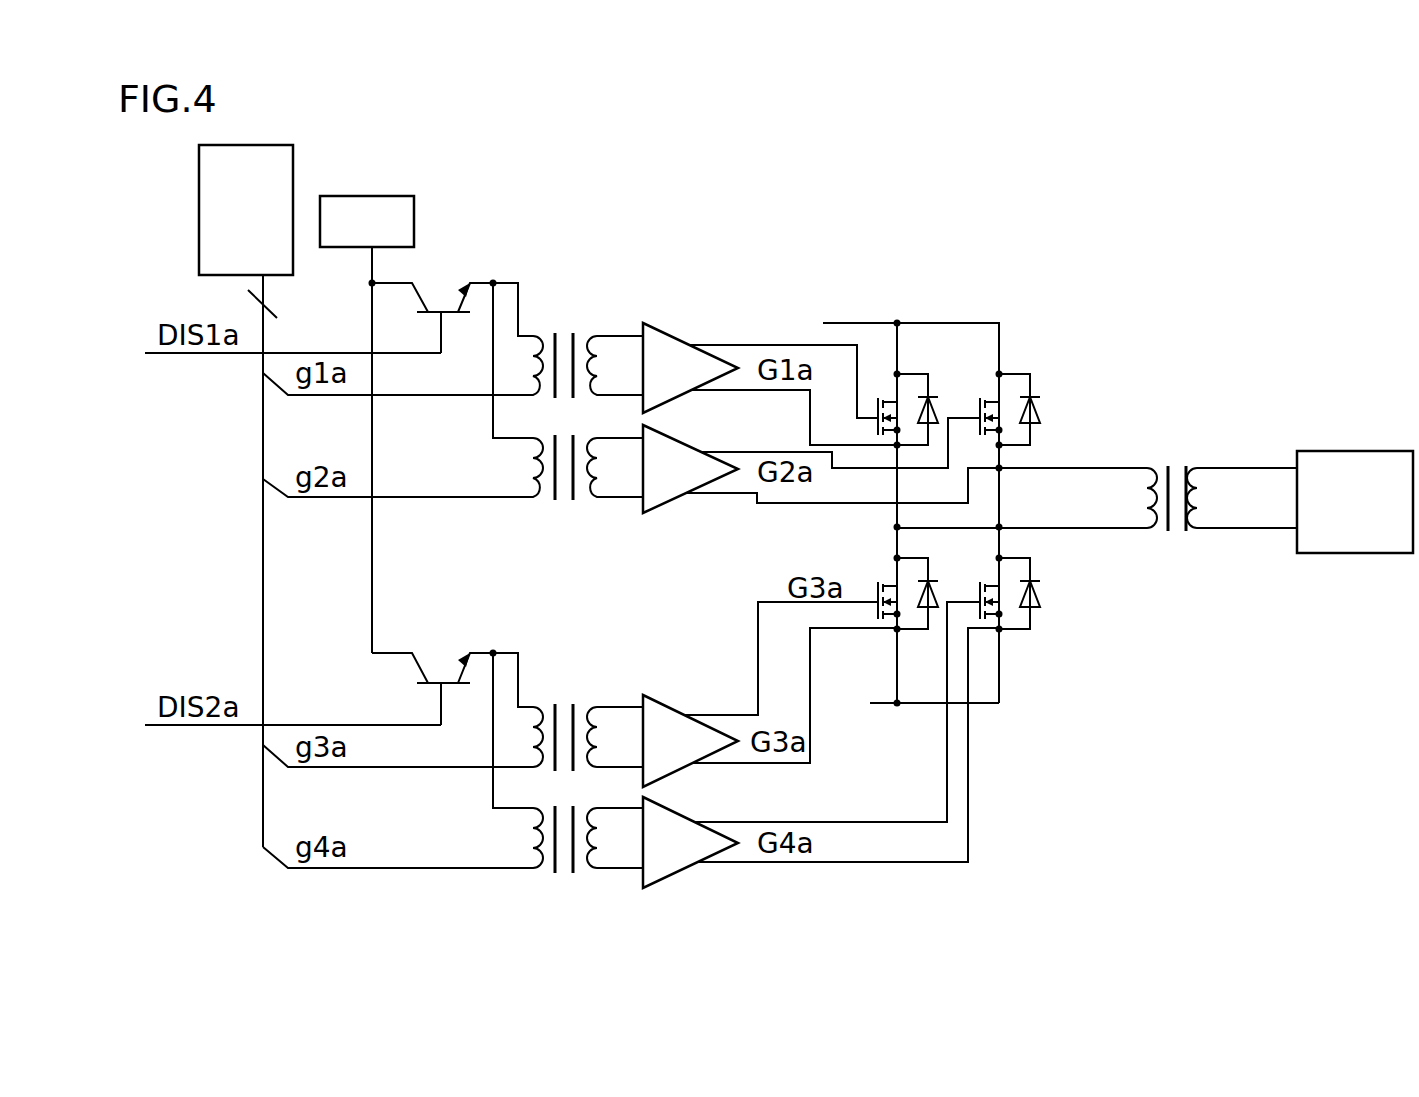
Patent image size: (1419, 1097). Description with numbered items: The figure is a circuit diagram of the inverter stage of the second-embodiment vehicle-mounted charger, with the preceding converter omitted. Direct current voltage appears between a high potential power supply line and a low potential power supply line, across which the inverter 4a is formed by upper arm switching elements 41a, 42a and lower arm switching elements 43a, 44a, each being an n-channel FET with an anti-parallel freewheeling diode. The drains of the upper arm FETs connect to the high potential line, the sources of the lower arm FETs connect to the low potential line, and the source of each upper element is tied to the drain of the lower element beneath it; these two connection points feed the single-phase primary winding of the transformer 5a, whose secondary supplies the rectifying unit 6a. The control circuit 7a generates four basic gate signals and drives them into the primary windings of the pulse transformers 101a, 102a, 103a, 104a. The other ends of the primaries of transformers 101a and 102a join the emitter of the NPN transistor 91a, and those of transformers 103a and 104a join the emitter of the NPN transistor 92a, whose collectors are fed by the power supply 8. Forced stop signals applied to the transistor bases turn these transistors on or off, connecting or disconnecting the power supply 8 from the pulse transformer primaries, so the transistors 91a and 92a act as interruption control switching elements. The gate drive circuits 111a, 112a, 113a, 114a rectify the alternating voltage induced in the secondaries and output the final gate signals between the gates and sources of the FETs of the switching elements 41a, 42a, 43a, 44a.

The control circuit 7a is at (247, 144).
The power supply 8 is at (372, 196).
The transistor 91a is at (427, 303).
The transistor 92a is at (421, 670).
The pulse transformer 101a is at (562, 330).
The pulse transformer 102a is at (557, 510).
The pulse transformer 103a is at (563, 700).
The pulse transformer 104a is at (557, 882).
The gate drive circuit 111a is at (673, 330).
The gate drive circuit 112a is at (670, 505).
The gate drive circuit 113a is at (700, 685).
The gate drive circuit 114a is at (665, 880).
The inverter 4a is at (1020, 302).
The upper arm switching element 41a is at (940, 378).
The upper arm switching element 42a is at (1053, 374).
The lower arm switching element 43a is at (884, 638).
The lower arm switching element 44a is at (1018, 643).
The transformer 5a is at (1177, 538).
The rectifying unit 6a is at (1353, 553).